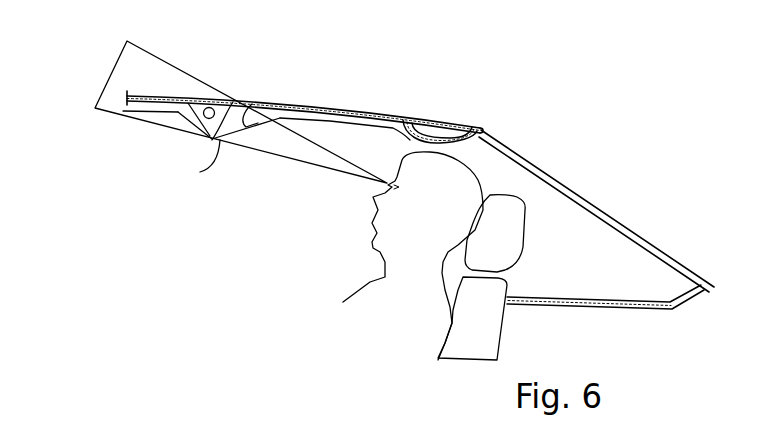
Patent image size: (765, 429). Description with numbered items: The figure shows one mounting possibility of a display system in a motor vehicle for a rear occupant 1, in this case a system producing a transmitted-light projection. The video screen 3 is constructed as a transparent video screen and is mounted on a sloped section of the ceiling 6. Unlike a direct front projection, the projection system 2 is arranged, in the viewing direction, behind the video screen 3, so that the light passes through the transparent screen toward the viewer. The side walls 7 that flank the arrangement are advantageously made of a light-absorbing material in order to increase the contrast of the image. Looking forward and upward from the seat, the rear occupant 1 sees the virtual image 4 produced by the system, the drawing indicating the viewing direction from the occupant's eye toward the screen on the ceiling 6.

The rear occupant 1 is at (412, 172).
The projection system 2 is at (207, 106).
The video screen 3 is at (262, 103).
The virtual image 4 is at (94, 93).
The ceiling 6 is at (347, 124).
The side walls 7 is at (195, 130).